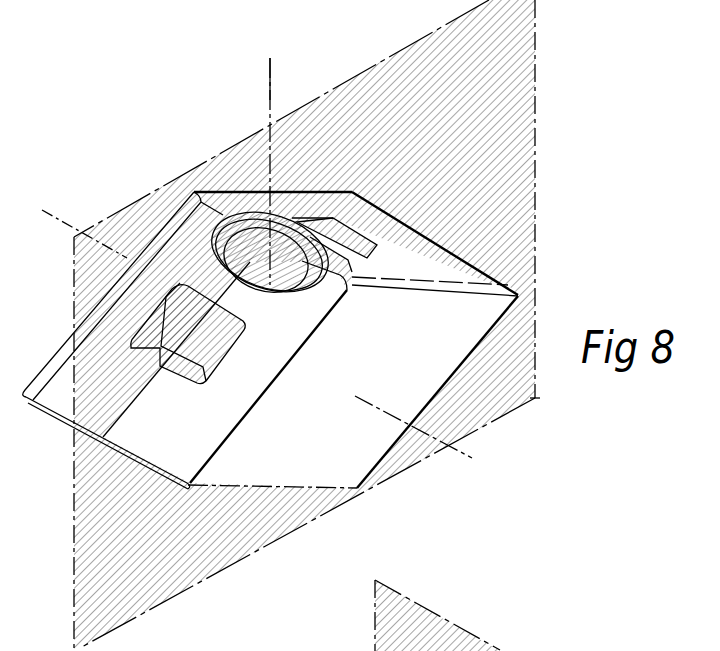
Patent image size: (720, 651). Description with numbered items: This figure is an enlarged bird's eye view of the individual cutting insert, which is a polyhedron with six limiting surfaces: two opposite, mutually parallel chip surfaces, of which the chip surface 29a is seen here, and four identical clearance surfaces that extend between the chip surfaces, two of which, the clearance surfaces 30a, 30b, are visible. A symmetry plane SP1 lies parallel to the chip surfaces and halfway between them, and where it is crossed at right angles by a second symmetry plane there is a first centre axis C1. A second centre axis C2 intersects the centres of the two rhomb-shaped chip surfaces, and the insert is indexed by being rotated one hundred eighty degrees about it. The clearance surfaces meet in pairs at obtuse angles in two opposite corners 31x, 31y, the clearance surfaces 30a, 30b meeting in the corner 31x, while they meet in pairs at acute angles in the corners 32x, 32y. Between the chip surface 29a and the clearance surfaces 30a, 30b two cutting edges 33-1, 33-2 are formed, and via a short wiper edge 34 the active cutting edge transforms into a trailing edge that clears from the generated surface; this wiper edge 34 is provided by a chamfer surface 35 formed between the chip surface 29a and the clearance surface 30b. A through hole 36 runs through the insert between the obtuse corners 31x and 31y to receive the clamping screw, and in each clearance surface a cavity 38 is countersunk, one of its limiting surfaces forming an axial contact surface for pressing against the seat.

The symmetry plane SP1 is at (525, 113).
The first centre axis C1 is at (268, 88).
The second centre axis C2 is at (471, 459).
The obtuse corner 31x is at (194, 190).
The obtuse corner 31y is at (358, 490).
The acute-angled corner 32x is at (188, 487).
The acute-angled corner 32y is at (520, 297).
The chip surface 29a is at (413, 386).
The clearance surface 30a is at (232, 417).
The clearance surface 30b is at (377, 245).
The cutting edge 33-1 is at (267, 386).
The cutting edge 33-2 is at (483, 343).
The wiper edge 34 is at (350, 290).
The chamfer surface 35 is at (405, 282).
The through hole 36 is at (260, 275).
The cavity 38 is at (172, 382).